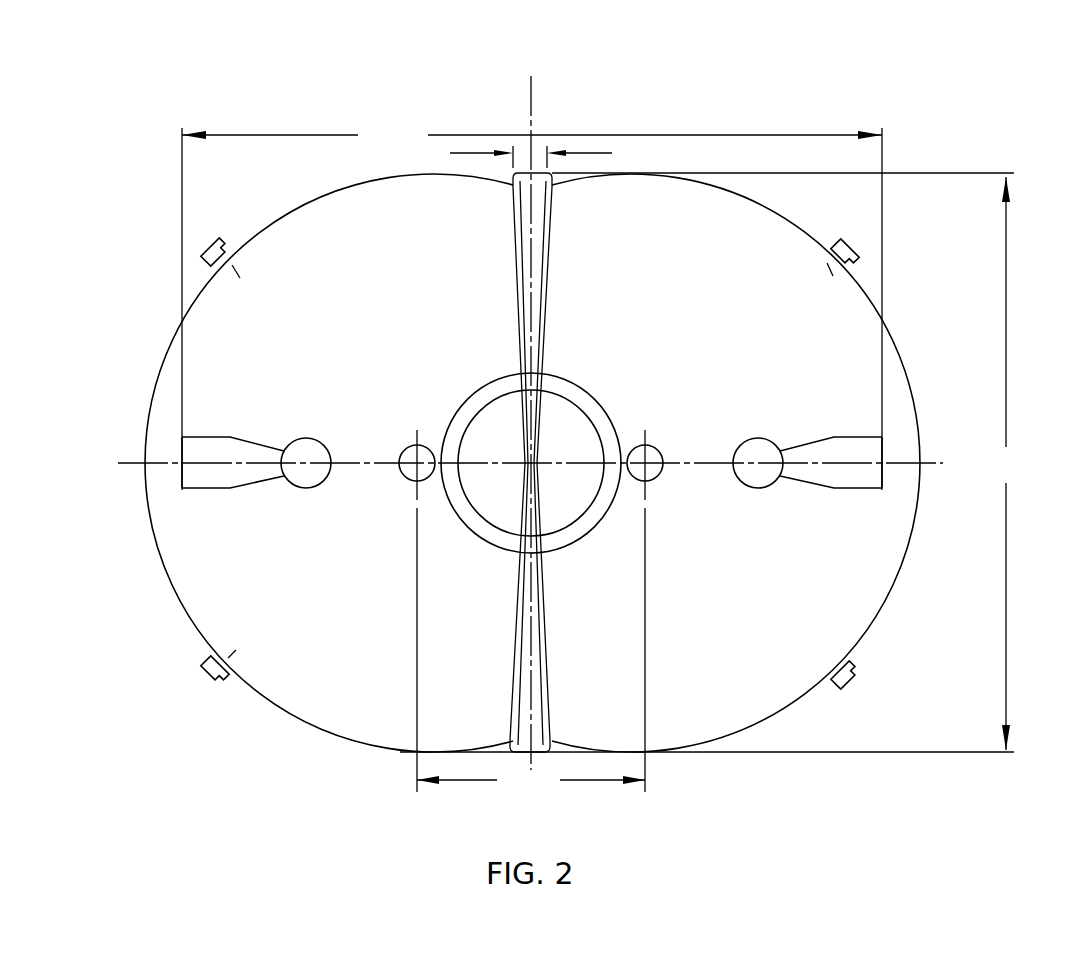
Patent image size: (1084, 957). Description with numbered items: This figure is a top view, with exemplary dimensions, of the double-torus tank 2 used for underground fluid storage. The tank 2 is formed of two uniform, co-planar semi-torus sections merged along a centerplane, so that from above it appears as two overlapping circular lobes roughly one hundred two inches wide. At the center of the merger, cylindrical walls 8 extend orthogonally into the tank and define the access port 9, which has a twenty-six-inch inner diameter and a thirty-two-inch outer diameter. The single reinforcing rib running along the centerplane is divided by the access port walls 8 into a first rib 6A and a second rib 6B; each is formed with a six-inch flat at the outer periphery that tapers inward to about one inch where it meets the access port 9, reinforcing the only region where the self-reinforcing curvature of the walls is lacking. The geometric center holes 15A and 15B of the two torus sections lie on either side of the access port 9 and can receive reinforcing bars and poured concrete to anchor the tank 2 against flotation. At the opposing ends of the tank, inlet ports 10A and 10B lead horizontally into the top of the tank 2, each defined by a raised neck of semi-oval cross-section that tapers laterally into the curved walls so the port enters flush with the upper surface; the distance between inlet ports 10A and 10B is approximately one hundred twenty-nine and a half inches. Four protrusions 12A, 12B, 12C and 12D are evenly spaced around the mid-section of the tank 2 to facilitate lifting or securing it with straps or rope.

The double-torus tank 2 is at (265, 100).
The first rib 6A is at (530, 743).
The second rib 6B is at (533, 173).
The cylindrical walls 8 is at (507, 378).
The access port 9 is at (502, 437).
The inlet port 10A is at (182, 437).
The inlet port 10B is at (884, 450).
The protrusion 12A is at (208, 680).
The protrusion 12B is at (851, 680).
The protrusion 12C is at (213, 250).
The protrusion 12D is at (850, 247).
The center hole 15A is at (403, 477).
The center hole 15B is at (660, 476).